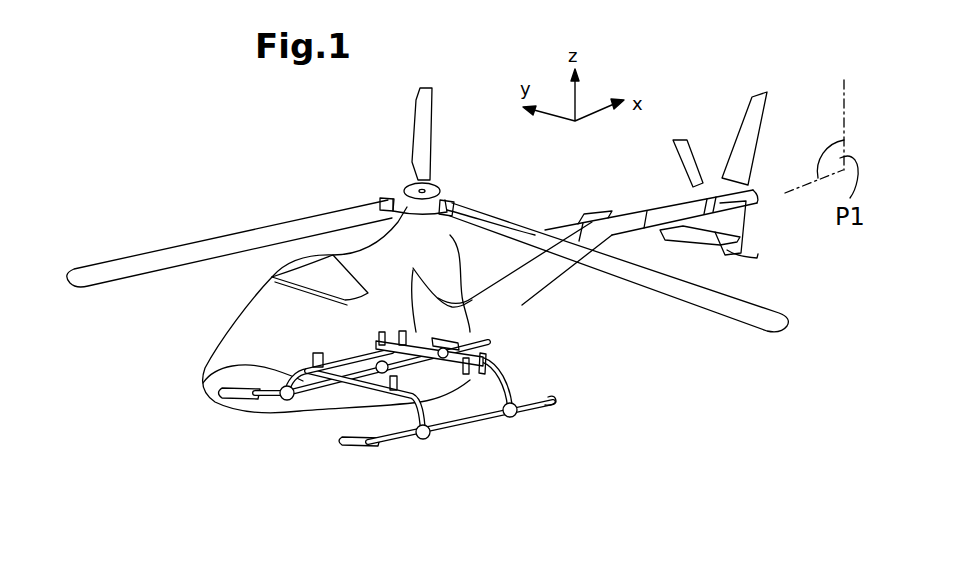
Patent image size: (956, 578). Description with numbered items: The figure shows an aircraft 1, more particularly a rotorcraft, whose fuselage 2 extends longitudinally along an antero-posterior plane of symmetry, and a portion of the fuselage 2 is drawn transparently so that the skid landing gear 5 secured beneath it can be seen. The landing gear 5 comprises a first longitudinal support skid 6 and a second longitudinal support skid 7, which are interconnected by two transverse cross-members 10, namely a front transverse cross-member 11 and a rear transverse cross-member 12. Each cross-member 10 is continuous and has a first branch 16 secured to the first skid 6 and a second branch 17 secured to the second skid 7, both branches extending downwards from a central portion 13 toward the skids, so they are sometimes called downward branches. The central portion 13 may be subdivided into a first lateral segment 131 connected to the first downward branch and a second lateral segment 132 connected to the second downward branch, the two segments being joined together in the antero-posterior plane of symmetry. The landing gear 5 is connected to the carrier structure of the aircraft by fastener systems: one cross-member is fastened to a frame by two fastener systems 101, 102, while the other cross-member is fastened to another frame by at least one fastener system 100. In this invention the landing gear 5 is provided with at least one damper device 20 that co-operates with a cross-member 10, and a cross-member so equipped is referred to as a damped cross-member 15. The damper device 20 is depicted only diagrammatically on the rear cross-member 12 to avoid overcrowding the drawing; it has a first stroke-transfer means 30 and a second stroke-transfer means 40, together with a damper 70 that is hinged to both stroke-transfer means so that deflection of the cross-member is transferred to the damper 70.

The aircraft 1 is at (277, 181).
The fuselage 2 is at (258, 300).
The skid landing gear 5 is at (454, 342).
The first longitudinal support skid 6 is at (484, 383).
The second longitudinal support skid 7 is at (299, 402).
The transverse cross-member 10 is at (454, 342).
The front transverse cross-member 11 is at (466, 379).
The rear transverse cross-member 12 is at (511, 357).
The central portion 13 is at (499, 352).
The damped cross-member 15 is at (491, 346).
The first branch 16 is at (417, 441).
The second branch 17 is at (207, 384).
The damper device 20 is at (483, 318).
The first stroke-transfer means 30 is at (512, 398).
The second stroke-transfer means 40 is at (391, 327).
The damper 70 is at (444, 347).
The fastener system 100 is at (420, 334).
The fastener system 101 is at (320, 352).
The fastener system 102 is at (377, 400).
The first lateral segment 131 is at (503, 364).
The second lateral segment 132 is at (404, 428).